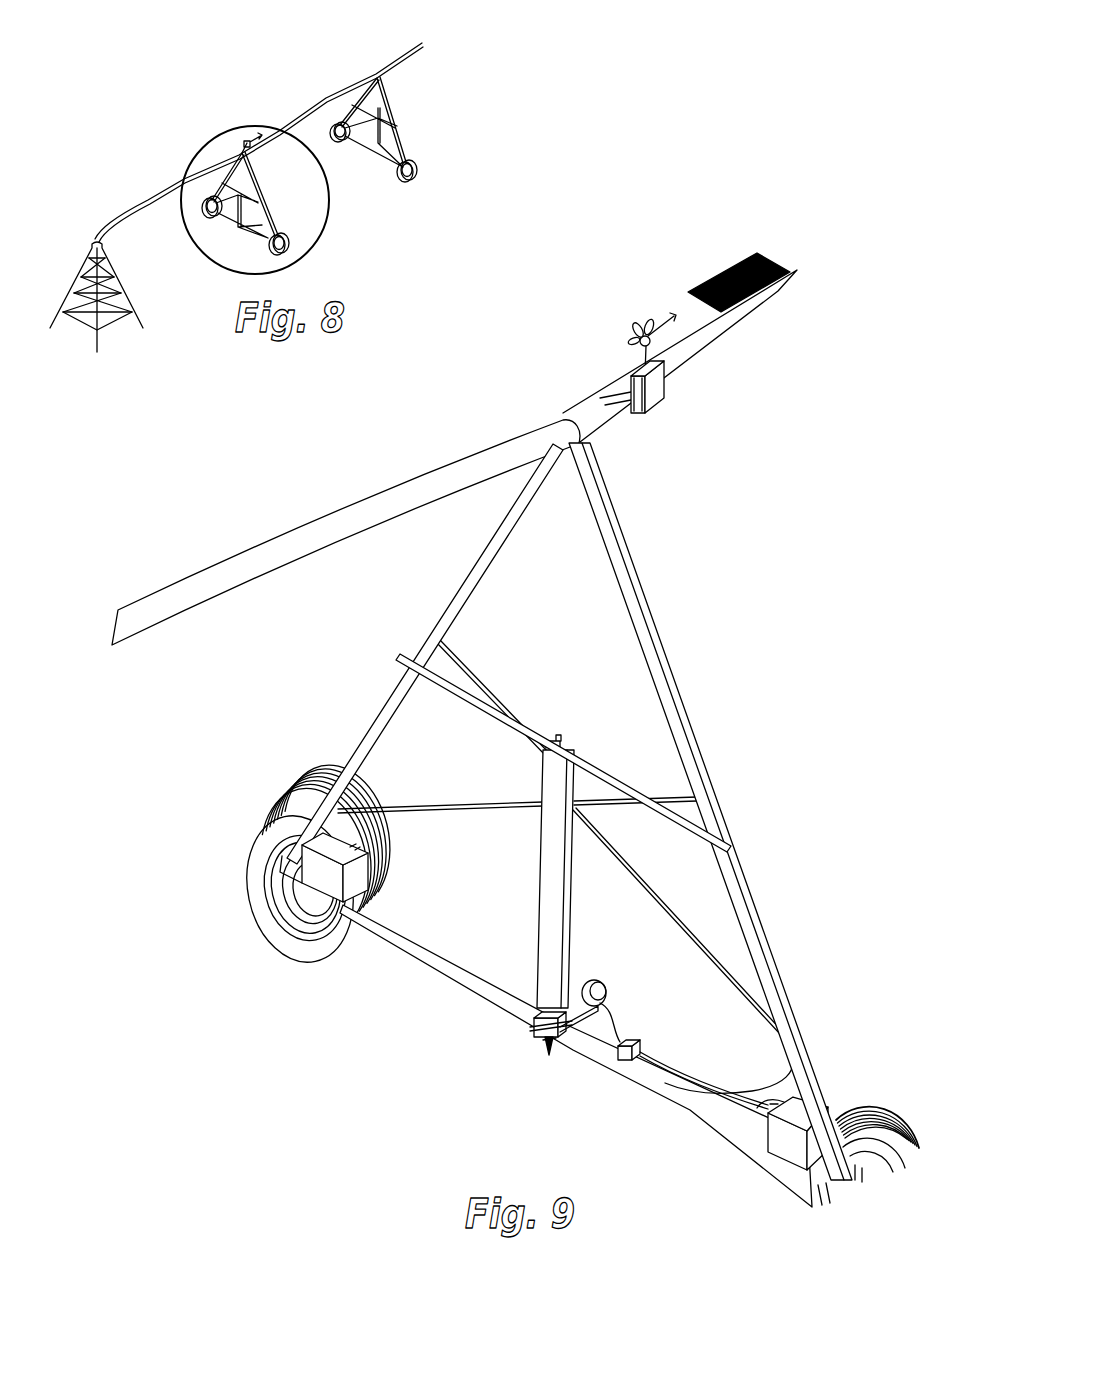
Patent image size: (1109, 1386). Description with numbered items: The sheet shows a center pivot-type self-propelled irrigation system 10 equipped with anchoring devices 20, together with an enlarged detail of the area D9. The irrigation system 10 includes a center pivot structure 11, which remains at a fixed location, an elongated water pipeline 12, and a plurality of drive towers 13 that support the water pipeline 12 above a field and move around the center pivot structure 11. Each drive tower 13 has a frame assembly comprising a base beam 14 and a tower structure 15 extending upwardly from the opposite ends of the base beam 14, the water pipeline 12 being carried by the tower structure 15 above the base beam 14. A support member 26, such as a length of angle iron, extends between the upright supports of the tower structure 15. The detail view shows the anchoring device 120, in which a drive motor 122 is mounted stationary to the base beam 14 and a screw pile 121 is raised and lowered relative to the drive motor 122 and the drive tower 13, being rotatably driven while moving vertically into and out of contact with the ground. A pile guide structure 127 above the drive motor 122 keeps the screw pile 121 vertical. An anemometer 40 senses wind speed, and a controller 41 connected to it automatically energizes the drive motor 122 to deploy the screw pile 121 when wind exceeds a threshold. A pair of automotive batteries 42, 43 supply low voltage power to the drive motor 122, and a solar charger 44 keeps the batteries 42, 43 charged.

In FIG. 8, the self-propelled irrigation system 10 is at (496, 56).
In FIG. 8, the center pivot structure 11 is at (89, 243).
In FIG. 8, the water pipeline 12 is at (150, 197).
In FIG. 8, the anchoring device 120 is at (375, 142).
In FIG. 8, the area D9 is at (238, 127).
In FIG. 9, the drive tower 13 is at (295, 685).
In FIG. 9, the base beam 14 is at (717, 1125).
In FIG. 9, the tower structure 15 is at (447, 600).
In FIG. 9, the anchoring device 20 is at (512, 930).
In FIG. 9, the support member 26 is at (609, 774).
In FIG. 9, the anemometer 40 is at (633, 337).
In FIG. 9, the controller 41 is at (658, 400).
In FIG. 9, the battery 42 is at (327, 885).
In FIG. 9, the battery 43 is at (782, 1152).
In FIG. 9, the solar charger 44 is at (722, 273).
In FIG. 9, the screw pile 121 is at (547, 1053).
In FIG. 9, the drive motor 122 is at (603, 987).
In FIG. 9, the pile guide structure 127 is at (542, 888).